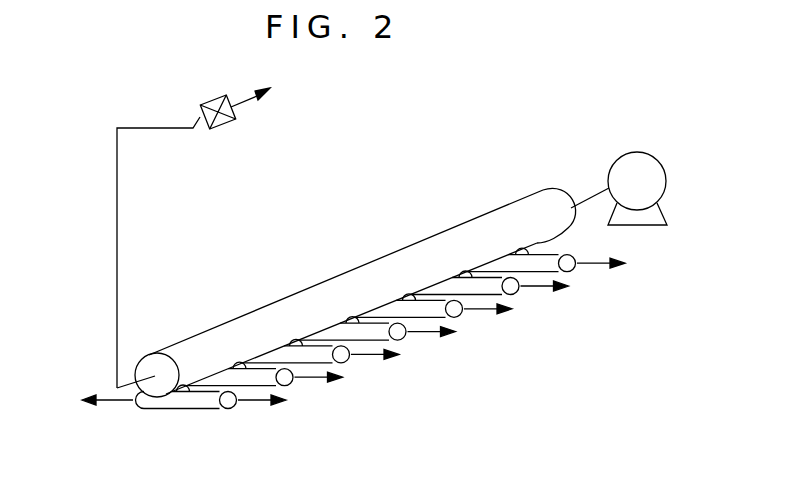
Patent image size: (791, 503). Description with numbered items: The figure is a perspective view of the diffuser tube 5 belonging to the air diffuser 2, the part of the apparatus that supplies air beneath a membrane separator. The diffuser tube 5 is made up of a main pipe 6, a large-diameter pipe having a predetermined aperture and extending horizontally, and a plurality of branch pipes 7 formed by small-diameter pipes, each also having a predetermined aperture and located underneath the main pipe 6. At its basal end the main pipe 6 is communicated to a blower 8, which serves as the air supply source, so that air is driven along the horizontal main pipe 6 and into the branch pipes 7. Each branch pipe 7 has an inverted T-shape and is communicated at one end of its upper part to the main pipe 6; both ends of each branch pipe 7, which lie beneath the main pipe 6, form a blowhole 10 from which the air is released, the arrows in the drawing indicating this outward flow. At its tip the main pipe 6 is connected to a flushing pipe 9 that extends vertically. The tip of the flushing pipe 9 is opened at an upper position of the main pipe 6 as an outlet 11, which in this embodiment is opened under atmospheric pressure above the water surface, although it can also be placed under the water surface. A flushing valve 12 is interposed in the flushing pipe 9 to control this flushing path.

The air diffuser 2 is at (525, 185).
The diffuser tube 5 is at (457, 143).
The main pipe 6 is at (388, 280).
The branch pipes 7 is at (452, 285).
The blower 8 is at (637, 152).
The flushing pipe 9 is at (118, 297).
The blowhole 10 is at (460, 317).
The outlet 11 is at (270, 88).
The flushing valve 12 is at (215, 129).